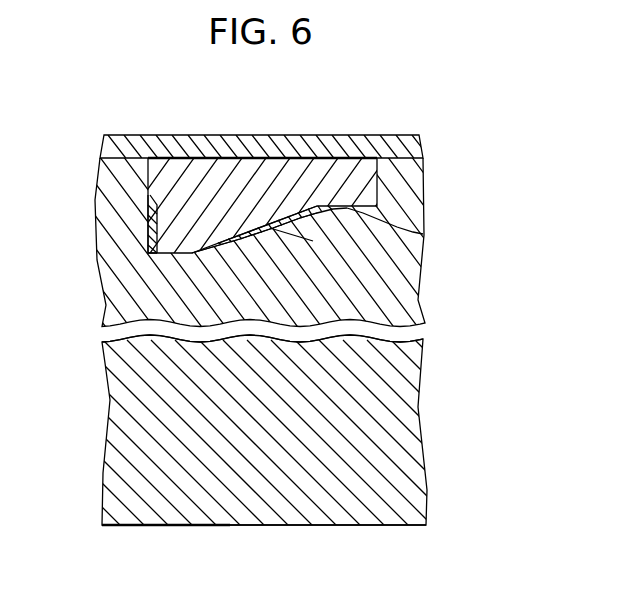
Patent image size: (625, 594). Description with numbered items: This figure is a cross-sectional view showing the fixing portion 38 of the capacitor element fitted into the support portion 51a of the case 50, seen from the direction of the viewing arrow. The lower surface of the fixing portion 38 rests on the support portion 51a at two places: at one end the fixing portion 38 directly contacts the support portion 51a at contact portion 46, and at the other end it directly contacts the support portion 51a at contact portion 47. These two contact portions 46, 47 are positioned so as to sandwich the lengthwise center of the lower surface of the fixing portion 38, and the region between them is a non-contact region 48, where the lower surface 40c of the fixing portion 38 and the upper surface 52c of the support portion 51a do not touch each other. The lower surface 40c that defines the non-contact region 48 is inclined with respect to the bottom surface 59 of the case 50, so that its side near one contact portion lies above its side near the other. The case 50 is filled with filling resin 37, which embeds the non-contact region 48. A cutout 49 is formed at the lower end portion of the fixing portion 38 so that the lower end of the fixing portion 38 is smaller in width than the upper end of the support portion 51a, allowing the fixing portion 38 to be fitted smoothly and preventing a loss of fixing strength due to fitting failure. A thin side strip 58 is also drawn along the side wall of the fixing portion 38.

The filling resin 37 is at (341, 142).
The fixing portion 38 is at (203, 190).
The lower surface 40c is at (260, 227).
The contact portion 46 is at (423, 234).
The contact portion 47 is at (197, 251).
The non-contact region 48 is at (212, 248).
The cutout 49 is at (157, 230).
The side strip 58 is at (150, 230).
The case 50 is at (380, 297).
The support portion 51a is at (313, 241).
The upper surface 52c is at (425, 343).
The bottom surface 59 is at (350, 525).